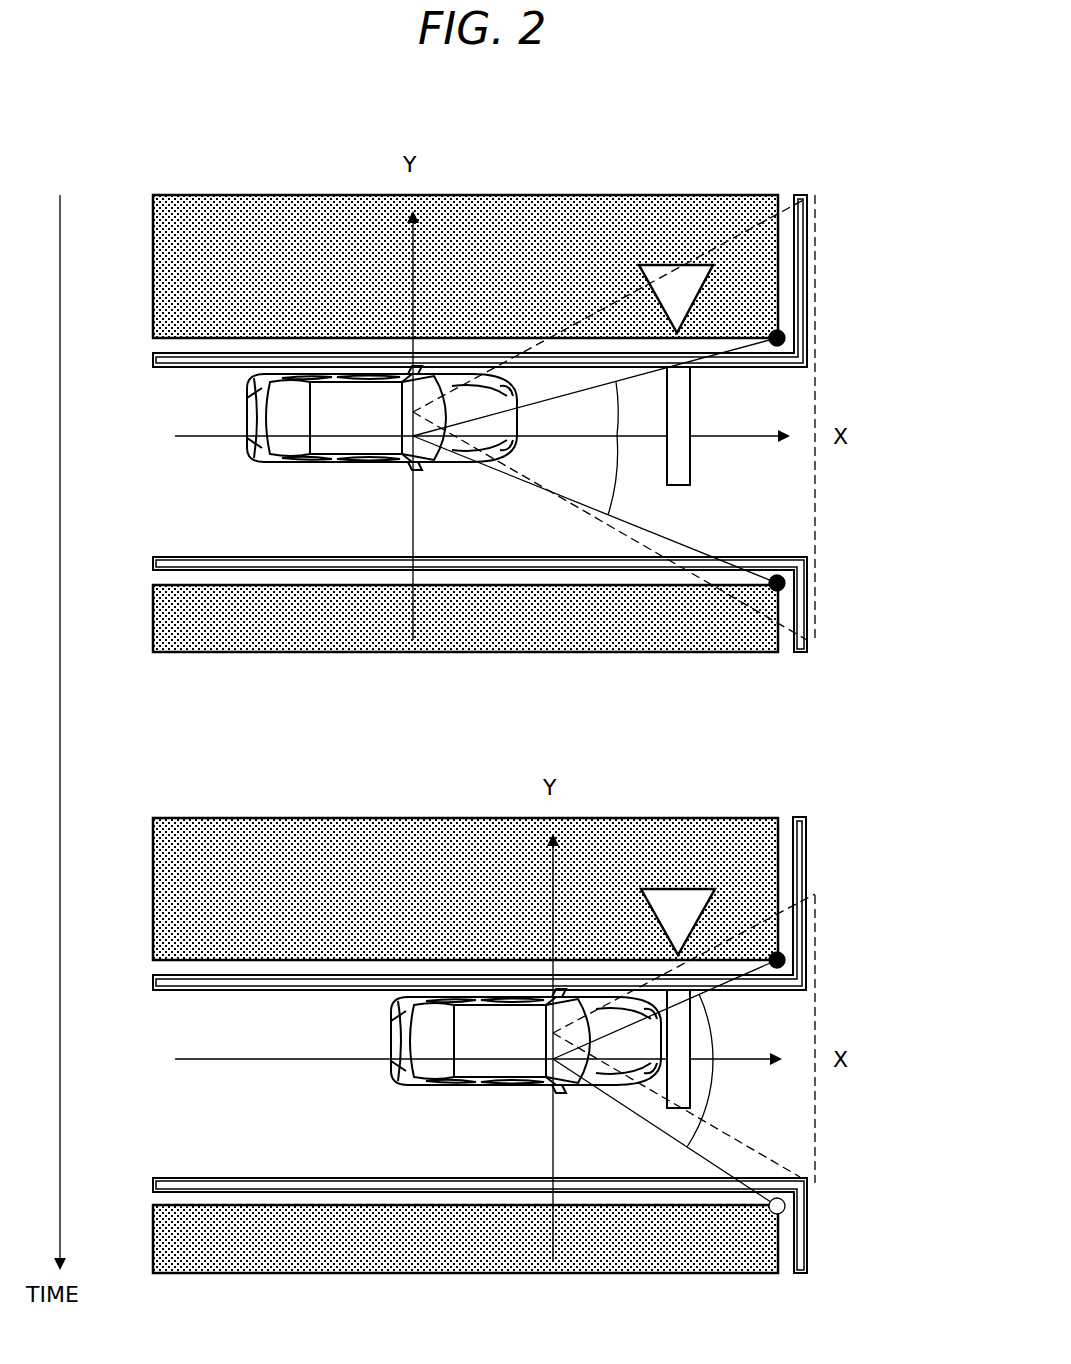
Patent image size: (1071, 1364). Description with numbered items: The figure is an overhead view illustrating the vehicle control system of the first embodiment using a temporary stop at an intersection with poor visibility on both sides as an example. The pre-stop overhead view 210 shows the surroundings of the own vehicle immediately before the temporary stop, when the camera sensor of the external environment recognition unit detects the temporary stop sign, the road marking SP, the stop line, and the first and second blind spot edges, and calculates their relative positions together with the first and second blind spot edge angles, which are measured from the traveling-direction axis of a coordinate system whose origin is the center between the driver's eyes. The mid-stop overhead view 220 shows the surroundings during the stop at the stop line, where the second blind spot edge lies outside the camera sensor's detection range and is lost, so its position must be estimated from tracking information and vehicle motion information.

The pre-stop overhead view 210 is at (790, 162).
The mid-stop overhead view 220 is at (790, 790).
The road marking SP is at (570, 452).